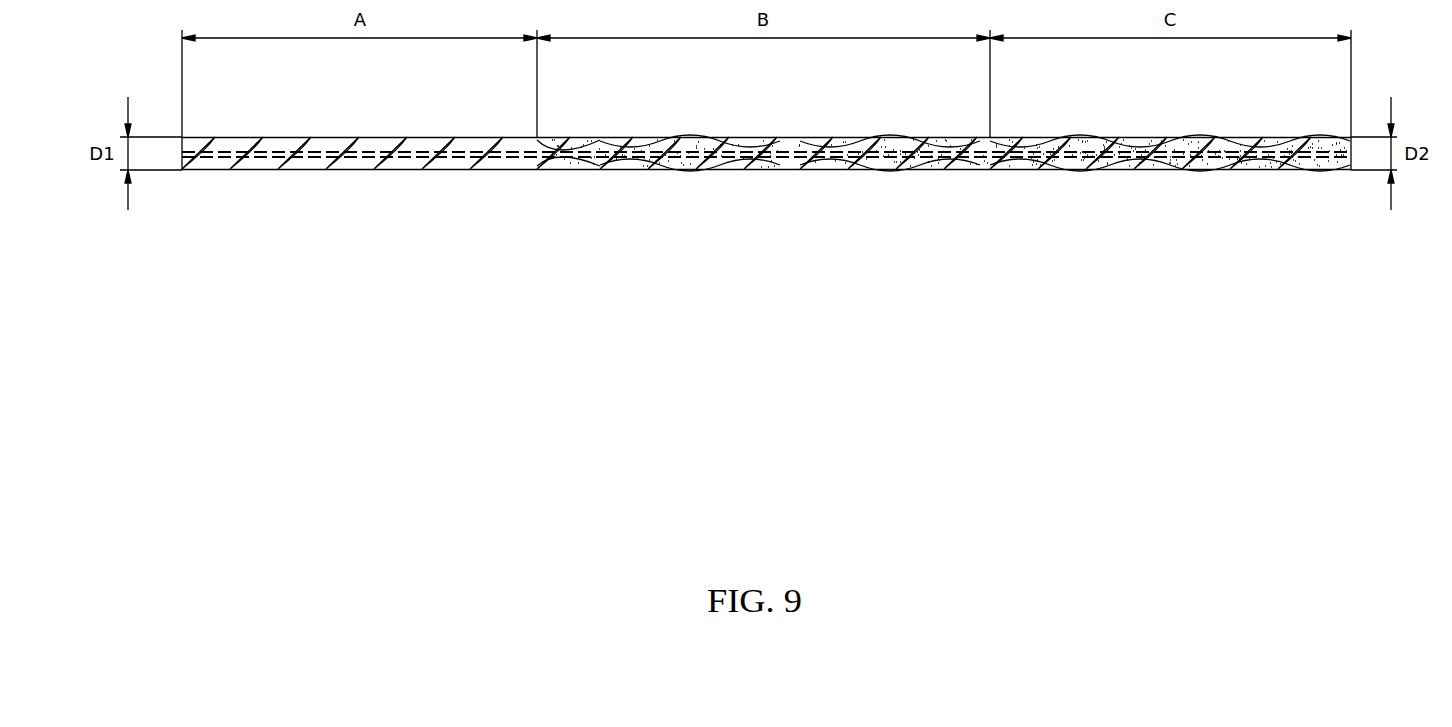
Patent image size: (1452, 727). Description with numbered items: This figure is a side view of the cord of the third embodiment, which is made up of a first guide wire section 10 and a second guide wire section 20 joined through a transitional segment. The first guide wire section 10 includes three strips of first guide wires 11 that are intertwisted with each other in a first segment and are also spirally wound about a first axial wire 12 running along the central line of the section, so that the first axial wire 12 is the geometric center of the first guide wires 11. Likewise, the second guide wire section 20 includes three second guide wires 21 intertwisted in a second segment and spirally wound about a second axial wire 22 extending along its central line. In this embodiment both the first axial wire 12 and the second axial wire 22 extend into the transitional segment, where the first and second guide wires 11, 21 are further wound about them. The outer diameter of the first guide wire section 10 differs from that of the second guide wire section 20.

The first guide wire section 10 is at (321, 243).
The first guide wires 11 is at (730, 166).
The first axial wire 12 is at (554, 167).
The second guide wire section 20 is at (1181, 243).
The second guide wires 21 is at (784, 167).
The second axial wire 22 is at (868, 167).